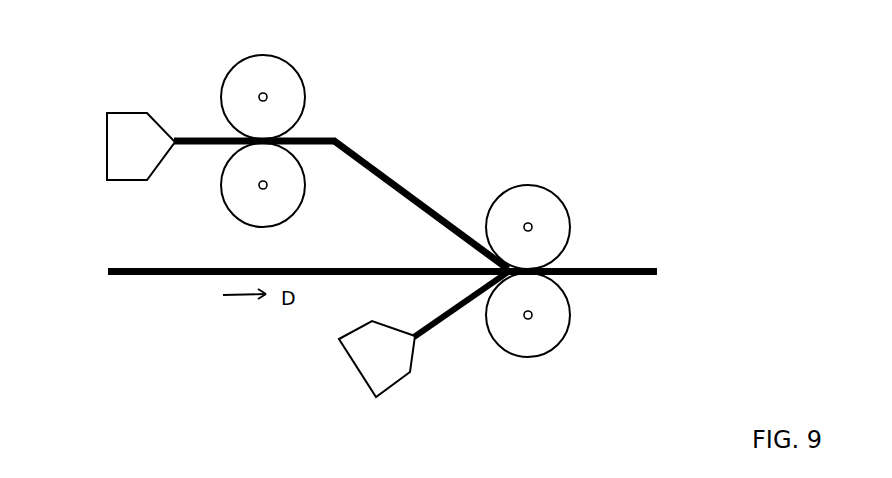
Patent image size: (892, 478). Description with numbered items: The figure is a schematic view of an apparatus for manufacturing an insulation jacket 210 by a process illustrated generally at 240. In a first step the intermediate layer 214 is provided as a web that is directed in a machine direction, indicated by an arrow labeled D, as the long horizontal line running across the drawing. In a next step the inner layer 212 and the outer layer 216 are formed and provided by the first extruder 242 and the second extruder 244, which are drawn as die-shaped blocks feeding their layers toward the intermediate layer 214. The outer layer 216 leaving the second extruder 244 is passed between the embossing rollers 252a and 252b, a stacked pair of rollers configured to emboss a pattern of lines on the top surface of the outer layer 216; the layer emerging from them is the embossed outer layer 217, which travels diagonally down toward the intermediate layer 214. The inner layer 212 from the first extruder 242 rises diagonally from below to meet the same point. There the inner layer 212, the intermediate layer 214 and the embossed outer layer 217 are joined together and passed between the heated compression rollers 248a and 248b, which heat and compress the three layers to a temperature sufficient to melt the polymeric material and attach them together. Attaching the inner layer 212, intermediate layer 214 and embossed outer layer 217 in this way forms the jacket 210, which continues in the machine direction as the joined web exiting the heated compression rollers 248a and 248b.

The jacket 210 is at (622, 268).
The inner layer 212 is at (445, 318).
The intermediate layer 214 is at (196, 276).
The outer layer 216 is at (190, 137).
The embossed outer layer 217 is at (400, 184).
The process 240 is at (617, 91).
The first extruder 242 is at (392, 392).
The second extruder 244 is at (107, 124).
The heated compression roller 248a is at (567, 205).
The heated compression roller 248b is at (548, 354).
The embossing roller 252a is at (295, 70).
The embossing roller 252b is at (293, 212).